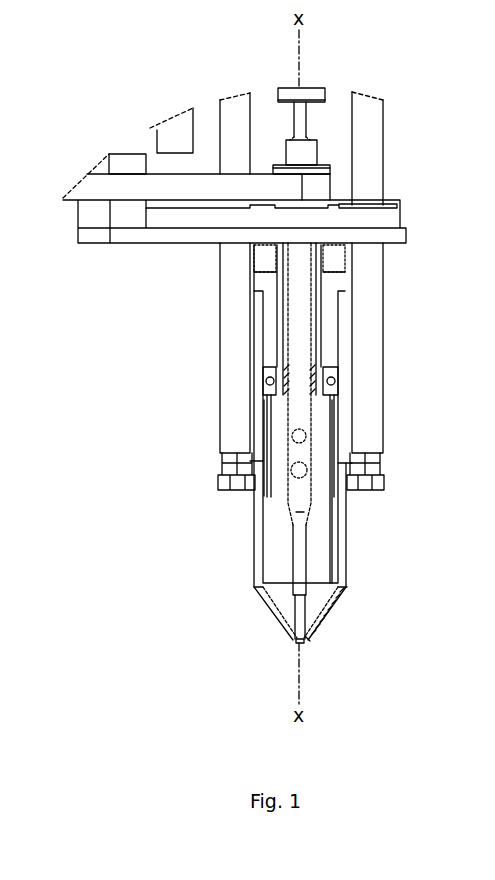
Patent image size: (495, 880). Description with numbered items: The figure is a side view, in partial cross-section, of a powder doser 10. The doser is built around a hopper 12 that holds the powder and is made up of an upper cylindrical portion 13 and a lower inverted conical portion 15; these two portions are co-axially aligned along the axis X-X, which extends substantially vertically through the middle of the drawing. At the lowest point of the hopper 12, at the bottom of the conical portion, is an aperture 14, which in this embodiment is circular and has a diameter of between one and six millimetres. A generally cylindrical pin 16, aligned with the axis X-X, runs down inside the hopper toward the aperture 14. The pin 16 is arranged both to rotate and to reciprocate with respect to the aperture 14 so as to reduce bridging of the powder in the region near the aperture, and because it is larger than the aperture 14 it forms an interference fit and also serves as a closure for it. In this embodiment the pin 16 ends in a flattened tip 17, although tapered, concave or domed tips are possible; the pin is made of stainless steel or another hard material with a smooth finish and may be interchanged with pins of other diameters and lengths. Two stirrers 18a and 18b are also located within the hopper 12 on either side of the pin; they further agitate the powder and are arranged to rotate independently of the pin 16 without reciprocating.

The powder doser 10 is at (86, 78).
The hopper 12 is at (253, 568).
The upper cylindrical portion 13 is at (345, 507).
The aperture 14 is at (308, 630).
The lower inverted conical portion 15 is at (345, 585).
The pin 16 is at (307, 543).
The flattened tip 17 is at (298, 627).
The stirrer 18a is at (330, 523).
The stirrer 18b is at (263, 435).